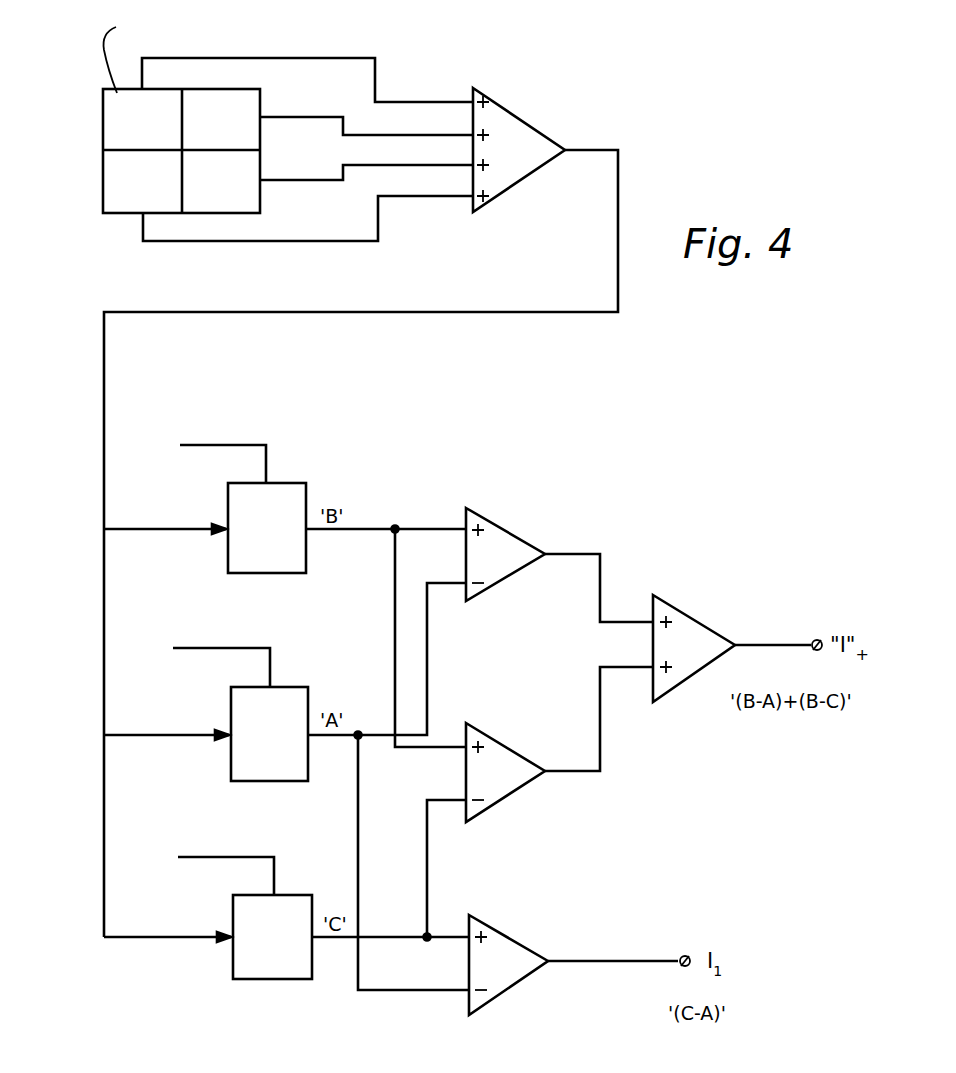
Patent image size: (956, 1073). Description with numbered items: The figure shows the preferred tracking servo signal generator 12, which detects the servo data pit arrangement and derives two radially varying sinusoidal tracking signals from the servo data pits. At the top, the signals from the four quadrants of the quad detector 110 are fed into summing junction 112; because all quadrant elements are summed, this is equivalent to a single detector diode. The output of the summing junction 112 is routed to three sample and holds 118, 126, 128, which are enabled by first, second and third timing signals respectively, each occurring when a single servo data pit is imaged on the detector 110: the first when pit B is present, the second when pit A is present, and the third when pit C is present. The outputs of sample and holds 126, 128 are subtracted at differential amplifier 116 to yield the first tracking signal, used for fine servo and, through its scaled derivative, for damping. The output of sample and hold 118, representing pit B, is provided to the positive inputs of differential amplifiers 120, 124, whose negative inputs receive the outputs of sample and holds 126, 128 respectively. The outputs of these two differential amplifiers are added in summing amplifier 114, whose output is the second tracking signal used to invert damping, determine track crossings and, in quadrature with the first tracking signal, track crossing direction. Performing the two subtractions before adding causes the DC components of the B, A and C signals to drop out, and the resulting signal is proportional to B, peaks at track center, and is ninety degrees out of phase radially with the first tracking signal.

The tracking servo signal generator 12 is at (640, 523).
The quad detector 110 is at (128, 194).
The summing junction 112 is at (514, 118).
The summing amplifier 114 is at (689, 627).
The differential amplifier 116 is at (500, 948).
The sample and hold 118 is at (290, 490).
The differential amplifier 120 is at (490, 533).
The differential amplifier 124 is at (494, 754).
The sample and hold 126 is at (290, 696).
The sample and hold 128 is at (292, 903).